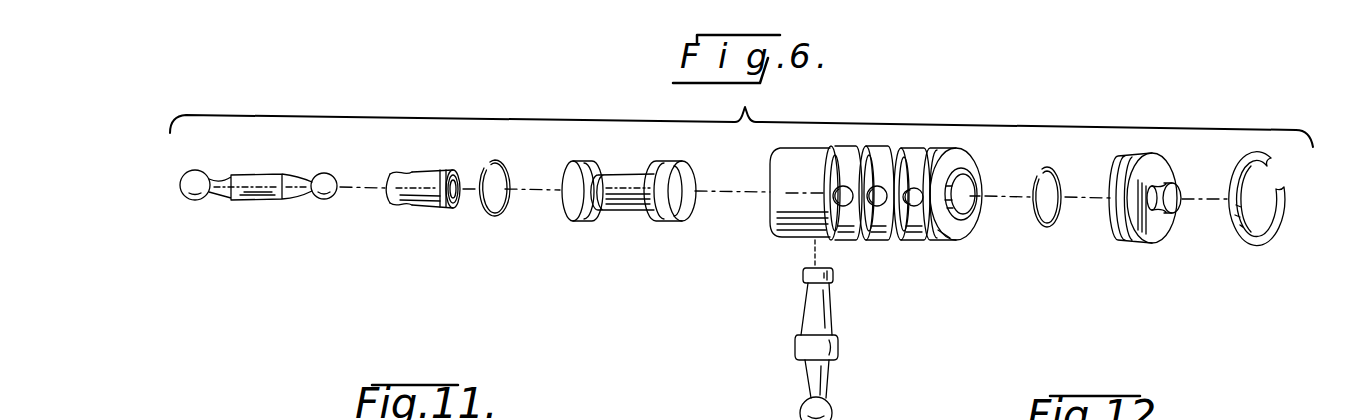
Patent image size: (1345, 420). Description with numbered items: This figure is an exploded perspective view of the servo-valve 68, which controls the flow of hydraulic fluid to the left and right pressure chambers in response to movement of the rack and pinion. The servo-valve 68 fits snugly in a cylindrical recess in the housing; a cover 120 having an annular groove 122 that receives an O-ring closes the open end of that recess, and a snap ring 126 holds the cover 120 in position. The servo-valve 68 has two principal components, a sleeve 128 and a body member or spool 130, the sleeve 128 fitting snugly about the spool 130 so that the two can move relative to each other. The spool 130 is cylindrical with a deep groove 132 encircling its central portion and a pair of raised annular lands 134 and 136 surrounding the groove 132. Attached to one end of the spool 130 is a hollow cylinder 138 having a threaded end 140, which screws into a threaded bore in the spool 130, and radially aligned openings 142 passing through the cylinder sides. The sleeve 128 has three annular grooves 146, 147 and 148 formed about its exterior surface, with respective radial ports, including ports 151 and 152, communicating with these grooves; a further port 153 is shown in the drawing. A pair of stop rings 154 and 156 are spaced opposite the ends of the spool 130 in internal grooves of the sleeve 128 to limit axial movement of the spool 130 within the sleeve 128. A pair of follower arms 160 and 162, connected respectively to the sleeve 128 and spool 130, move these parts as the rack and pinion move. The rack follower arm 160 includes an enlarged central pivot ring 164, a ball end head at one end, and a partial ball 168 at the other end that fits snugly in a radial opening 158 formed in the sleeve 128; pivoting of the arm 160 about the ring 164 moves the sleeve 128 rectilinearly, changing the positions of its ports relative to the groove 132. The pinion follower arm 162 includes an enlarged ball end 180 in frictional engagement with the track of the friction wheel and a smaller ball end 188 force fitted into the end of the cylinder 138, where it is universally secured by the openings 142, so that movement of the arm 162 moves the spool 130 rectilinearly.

The servo-valve 68 is at (679, 252).
The cover 120 is at (1147, 219).
The annular groove 122 is at (1132, 240).
The snap ring 126 is at (1270, 243).
The sleeve 128 is at (877, 194).
The spool 130 is at (635, 198).
The groove 132 is at (648, 148).
The land 134 is at (584, 162).
The land 136 is at (674, 165).
The cylinder 138 is at (427, 192).
The threaded end 140 is at (444, 176).
The openings 142 is at (408, 170).
The annular groove 146 is at (804, 164).
The annular groove 147 is at (913, 179).
The annular groove 148 is at (961, 203).
The radial port 151 is at (833, 198).
The radial port 152 is at (880, 212).
The ring opening 153 is at (918, 226).
The stop ring 154 is at (492, 216).
The stop ring 156 is at (1053, 172).
The radial opening 158 is at (815, 238).
The rack follower arm 160 is at (817, 344).
The pinion follower arm 162 is at (250, 190).
The pivot ring 164 is at (799, 355).
The partial ball 168 is at (832, 275).
The enlarged ball end 180 is at (199, 200).
The smaller ball end 188 is at (325, 199).